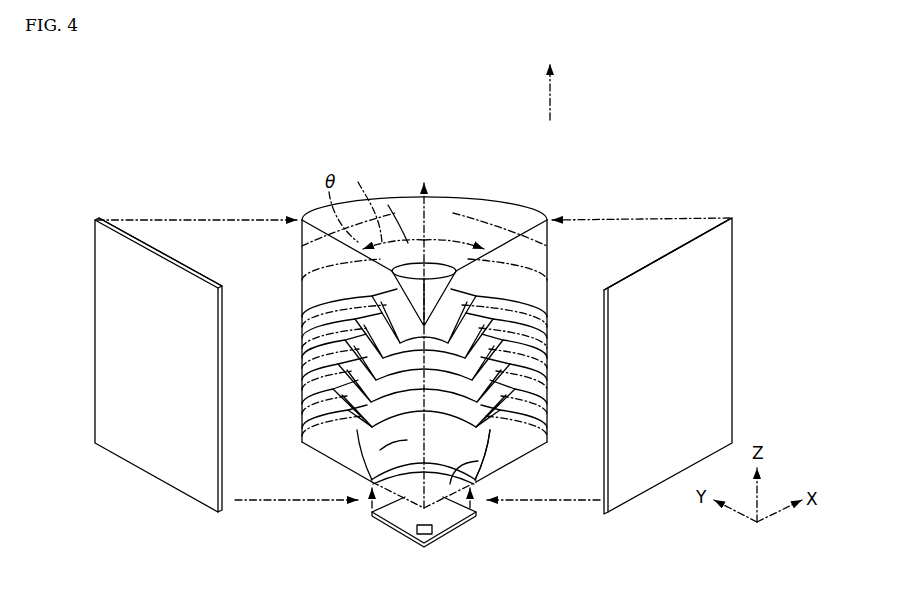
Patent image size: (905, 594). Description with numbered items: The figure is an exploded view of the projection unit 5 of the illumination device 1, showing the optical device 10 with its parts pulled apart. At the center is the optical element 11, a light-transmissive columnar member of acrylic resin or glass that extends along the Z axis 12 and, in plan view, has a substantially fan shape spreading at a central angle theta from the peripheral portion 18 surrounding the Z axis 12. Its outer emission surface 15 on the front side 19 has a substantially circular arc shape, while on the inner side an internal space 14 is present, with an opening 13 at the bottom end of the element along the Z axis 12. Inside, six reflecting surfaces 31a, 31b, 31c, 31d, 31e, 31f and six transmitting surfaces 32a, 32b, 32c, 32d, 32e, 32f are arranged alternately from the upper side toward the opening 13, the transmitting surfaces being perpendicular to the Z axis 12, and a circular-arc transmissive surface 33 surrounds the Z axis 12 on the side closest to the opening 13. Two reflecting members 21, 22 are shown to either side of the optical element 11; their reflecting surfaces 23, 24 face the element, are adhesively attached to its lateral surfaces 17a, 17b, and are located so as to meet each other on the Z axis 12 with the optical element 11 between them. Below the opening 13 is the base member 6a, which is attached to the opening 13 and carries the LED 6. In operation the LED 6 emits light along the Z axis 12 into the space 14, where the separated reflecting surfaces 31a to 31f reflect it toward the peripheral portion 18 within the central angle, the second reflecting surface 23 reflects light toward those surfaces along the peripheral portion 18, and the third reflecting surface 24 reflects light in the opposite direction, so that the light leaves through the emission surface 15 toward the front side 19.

The illumination device 1 is at (626, 128).
The projection unit 5 is at (629, 149).
The LED 6 is at (433, 531).
The base member 6a is at (479, 516).
The optical device 10 is at (460, 96).
The optical element 11 is at (424, 283).
The Z axis 12 is at (424, 224).
The opening 13 is at (497, 471).
The space 14 is at (368, 456).
The emission surface 15 is at (476, 197).
The lateral surface 17a is at (548, 242).
The lateral surface 17b is at (308, 242).
The peripheral portion 18 is at (379, 202).
The front side 19 is at (550, 103).
The reflecting member 21 is at (584, 307).
The reflecting member 22 is at (235, 306).
The second reflecting surface 23 is at (628, 275).
The third reflecting surface 24 is at (200, 272).
The fourth reflecting surface 31a is at (302, 317).
The fifth reflecting surface 31b is at (302, 338).
The sixth reflecting surface 31c is at (302, 358).
The seventh reflecting surface 31d is at (302, 380).
The eighth reflecting surface 31e is at (302, 404).
The ninth reflecting surface 31f is at (302, 428).
The first transmitting surface 32a is at (547, 317).
The second transmitting surface 32b is at (547, 338).
The third transmitting surface 32c is at (547, 358).
The fourth transmitting surface 32d is at (547, 380).
The fifth transmitting surface 32e is at (547, 404).
The sixth transmitting surface 32f is at (547, 428).
The transmissive surface 33 is at (500, 448).